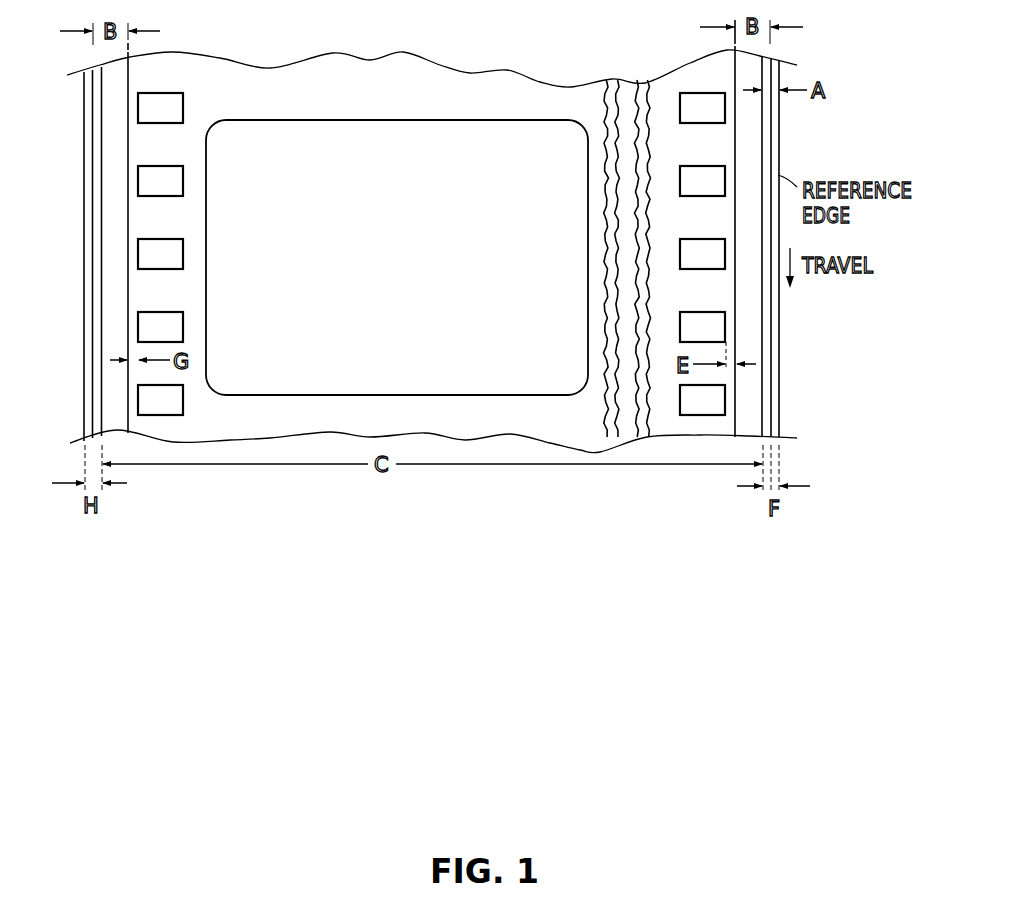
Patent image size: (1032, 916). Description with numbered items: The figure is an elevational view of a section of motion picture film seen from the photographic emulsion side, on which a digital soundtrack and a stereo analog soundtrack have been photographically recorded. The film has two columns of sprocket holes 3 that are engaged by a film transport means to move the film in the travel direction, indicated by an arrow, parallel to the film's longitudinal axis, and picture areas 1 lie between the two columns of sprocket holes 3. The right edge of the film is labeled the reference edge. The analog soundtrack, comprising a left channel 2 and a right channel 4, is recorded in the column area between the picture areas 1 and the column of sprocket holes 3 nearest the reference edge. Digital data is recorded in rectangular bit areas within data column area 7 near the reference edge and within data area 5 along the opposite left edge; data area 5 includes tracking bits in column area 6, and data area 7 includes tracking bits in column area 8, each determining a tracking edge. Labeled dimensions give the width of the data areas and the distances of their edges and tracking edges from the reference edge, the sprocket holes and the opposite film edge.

The picture areas 1 is at (545, 120).
The left channel 2 is at (613, 82).
The sprocket holes 3 is at (170, 93).
The right channel 4 is at (642, 88).
The data area 5 is at (113, 72).
The column area 6 is at (93, 118).
The data column area 7 is at (753, 63).
The column area 8 is at (768, 130).